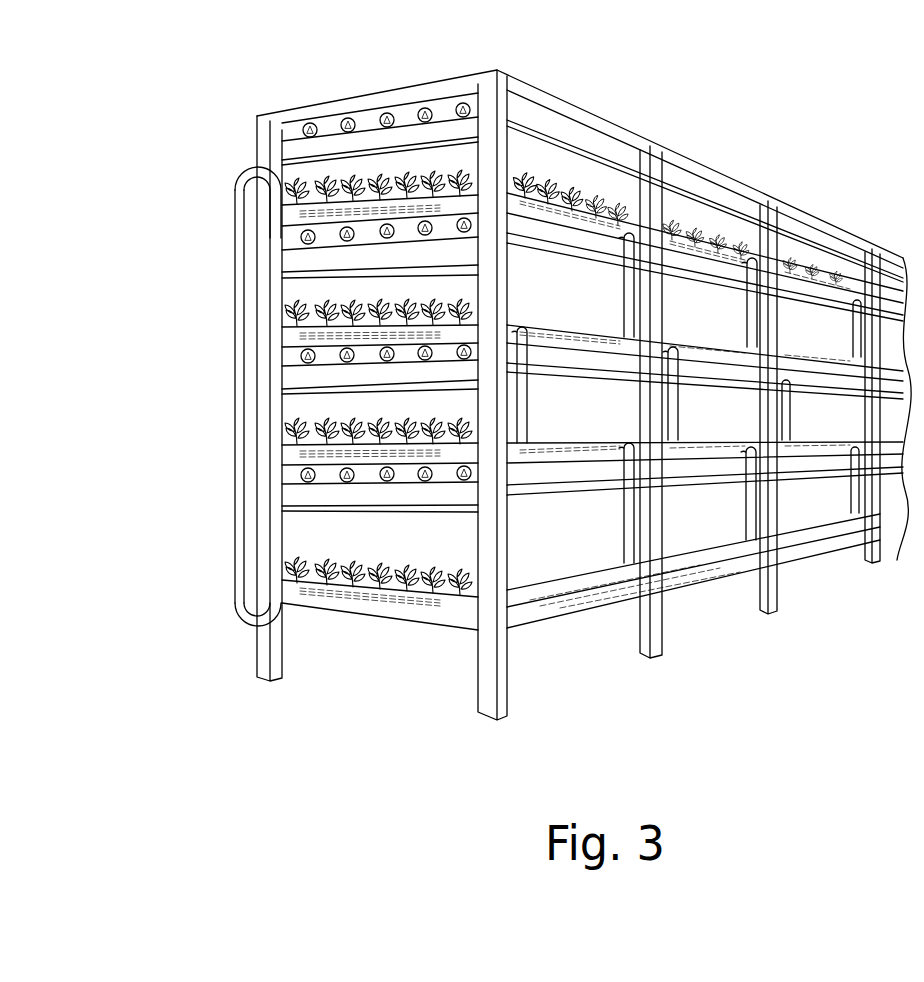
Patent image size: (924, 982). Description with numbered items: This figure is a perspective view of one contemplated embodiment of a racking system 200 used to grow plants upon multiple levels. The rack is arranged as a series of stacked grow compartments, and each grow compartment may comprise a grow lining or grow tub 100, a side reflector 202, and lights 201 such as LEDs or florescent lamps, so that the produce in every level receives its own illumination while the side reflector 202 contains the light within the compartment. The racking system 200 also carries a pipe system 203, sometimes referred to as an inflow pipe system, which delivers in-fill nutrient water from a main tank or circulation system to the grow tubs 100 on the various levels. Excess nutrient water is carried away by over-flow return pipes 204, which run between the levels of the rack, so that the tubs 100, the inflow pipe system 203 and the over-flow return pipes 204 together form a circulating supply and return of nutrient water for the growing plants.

The racking system 200 is at (707, 608).
The lights 201 is at (311, 118).
The side reflector 202 is at (268, 148).
The pipe system 203 is at (202, 341).
The grow lining or grow tub 100 is at (273, 580).
The over-flow return pipes 204 is at (548, 626).